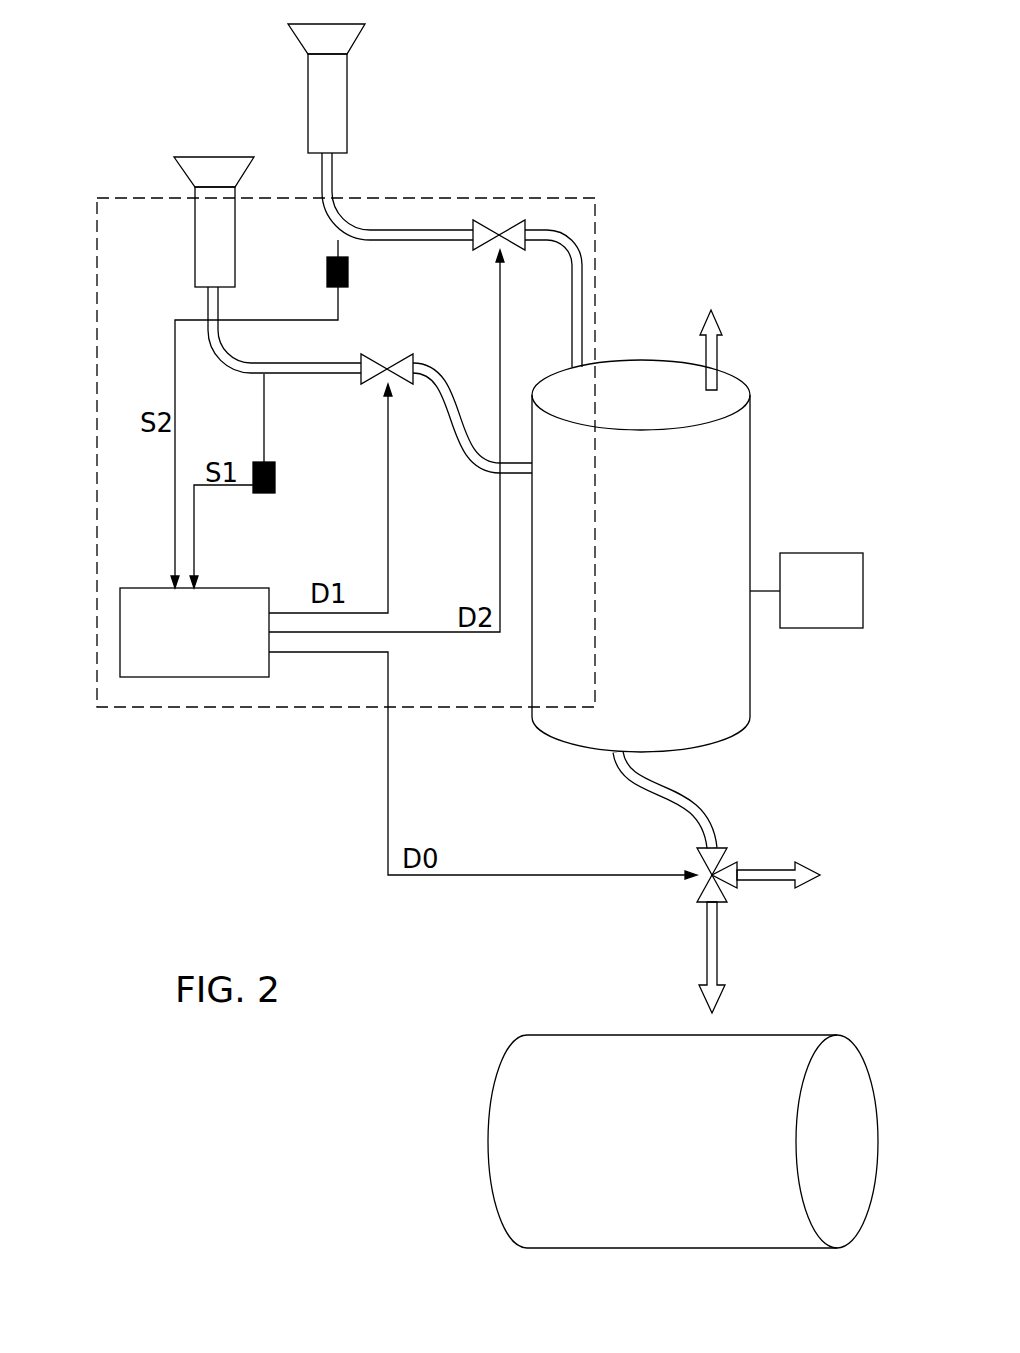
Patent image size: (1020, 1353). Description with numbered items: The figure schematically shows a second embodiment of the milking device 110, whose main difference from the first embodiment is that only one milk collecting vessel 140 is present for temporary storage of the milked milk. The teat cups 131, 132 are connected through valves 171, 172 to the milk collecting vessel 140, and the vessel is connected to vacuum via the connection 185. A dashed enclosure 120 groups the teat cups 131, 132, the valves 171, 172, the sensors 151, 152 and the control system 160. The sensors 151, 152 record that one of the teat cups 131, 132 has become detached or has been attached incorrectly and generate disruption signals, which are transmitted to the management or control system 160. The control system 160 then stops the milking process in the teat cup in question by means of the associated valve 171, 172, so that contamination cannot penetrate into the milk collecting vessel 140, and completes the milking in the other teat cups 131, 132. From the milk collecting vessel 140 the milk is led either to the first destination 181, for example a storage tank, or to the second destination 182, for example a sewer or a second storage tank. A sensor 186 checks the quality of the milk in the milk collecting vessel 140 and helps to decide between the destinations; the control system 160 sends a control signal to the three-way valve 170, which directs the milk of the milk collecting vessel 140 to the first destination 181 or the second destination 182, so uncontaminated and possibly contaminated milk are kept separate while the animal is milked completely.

The milking device 110 is at (687, 63).
The dosing unit 120 is at (595, 238).
The teat cup 131 is at (170, 287).
The teat cup 132 is at (385, 24).
The milk collecting vessel 140 is at (737, 456).
The sensor 151 is at (275, 477).
The sensor 152 is at (348, 272).
The control system 160 is at (164, 657).
The three-way valve 170 is at (707, 892).
The valve 171 is at (406, 370).
The valve 172 is at (520, 223).
The first destination 181 is at (683, 1141).
The second destination 182 is at (804, 875).
The connection 185 is at (725, 331).
The sensor 186 is at (812, 557).